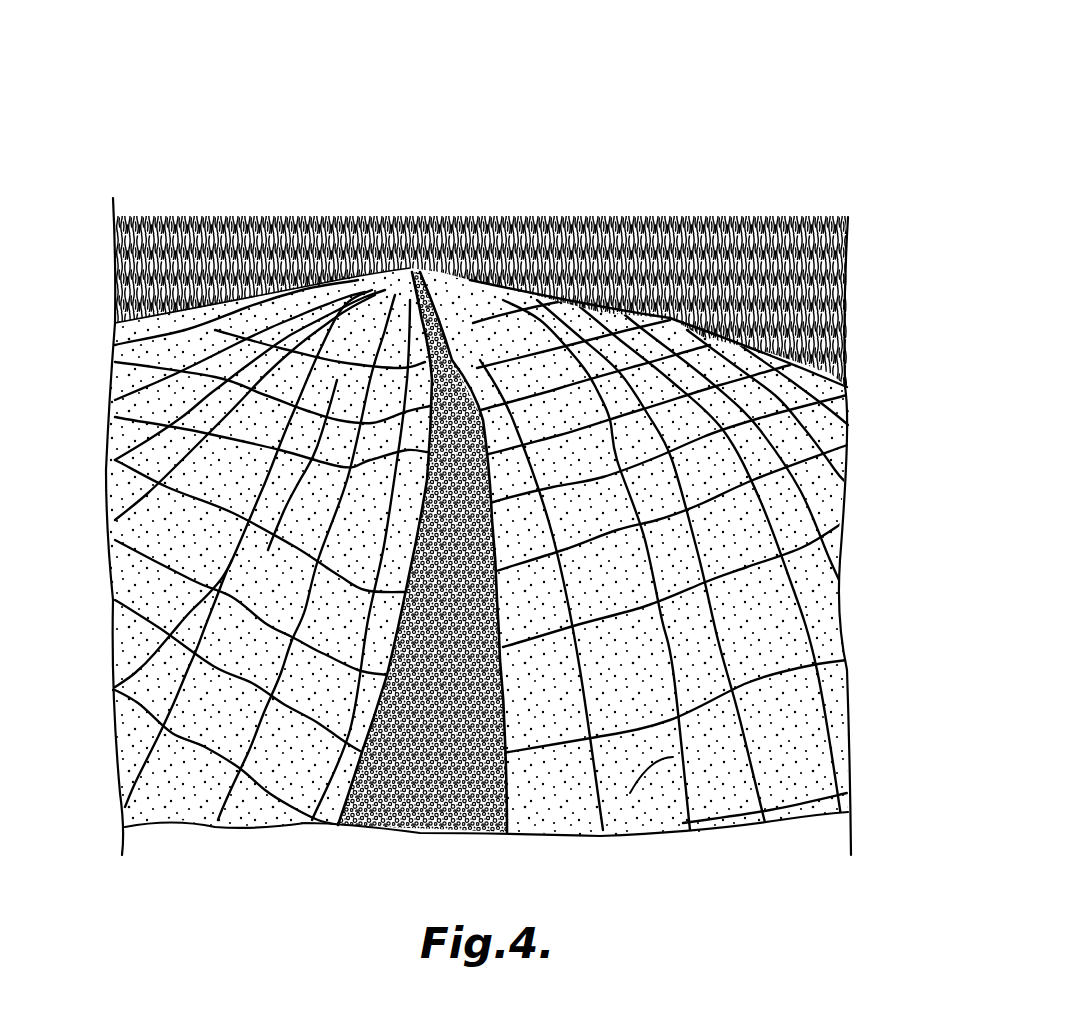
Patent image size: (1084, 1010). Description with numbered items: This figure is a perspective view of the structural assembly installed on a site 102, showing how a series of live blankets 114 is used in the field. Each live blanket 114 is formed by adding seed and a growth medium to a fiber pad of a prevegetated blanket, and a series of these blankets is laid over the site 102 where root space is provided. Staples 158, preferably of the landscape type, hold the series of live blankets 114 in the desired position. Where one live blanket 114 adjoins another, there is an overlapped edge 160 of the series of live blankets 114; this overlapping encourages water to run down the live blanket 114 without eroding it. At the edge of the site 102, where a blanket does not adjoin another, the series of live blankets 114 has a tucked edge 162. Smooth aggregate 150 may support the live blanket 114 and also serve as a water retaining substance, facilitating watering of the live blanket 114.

The site 102 is at (603, 116).
The live blanket 114 is at (385, 255).
The smooth aggregate 150 is at (387, 826).
The staples 158 is at (597, 793).
The overlapped edge 160 is at (657, 678).
The tucked edge 162 is at (668, 285).